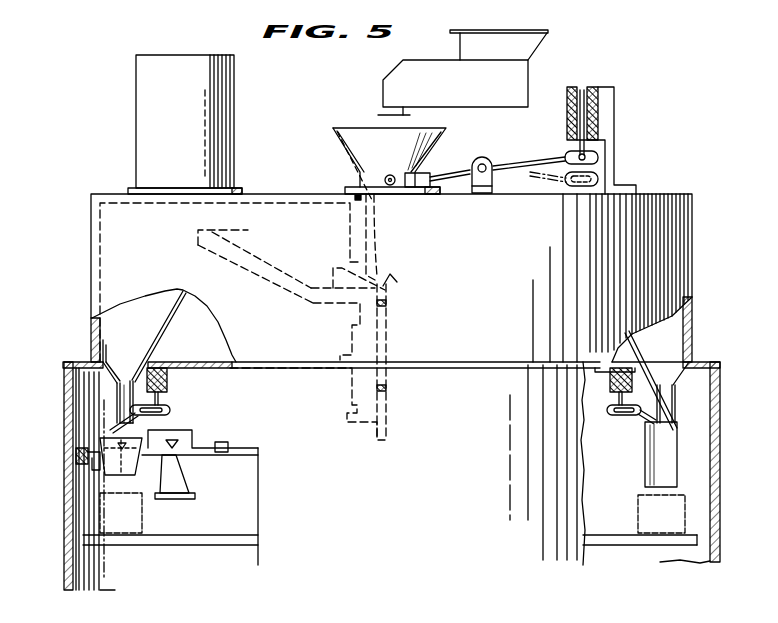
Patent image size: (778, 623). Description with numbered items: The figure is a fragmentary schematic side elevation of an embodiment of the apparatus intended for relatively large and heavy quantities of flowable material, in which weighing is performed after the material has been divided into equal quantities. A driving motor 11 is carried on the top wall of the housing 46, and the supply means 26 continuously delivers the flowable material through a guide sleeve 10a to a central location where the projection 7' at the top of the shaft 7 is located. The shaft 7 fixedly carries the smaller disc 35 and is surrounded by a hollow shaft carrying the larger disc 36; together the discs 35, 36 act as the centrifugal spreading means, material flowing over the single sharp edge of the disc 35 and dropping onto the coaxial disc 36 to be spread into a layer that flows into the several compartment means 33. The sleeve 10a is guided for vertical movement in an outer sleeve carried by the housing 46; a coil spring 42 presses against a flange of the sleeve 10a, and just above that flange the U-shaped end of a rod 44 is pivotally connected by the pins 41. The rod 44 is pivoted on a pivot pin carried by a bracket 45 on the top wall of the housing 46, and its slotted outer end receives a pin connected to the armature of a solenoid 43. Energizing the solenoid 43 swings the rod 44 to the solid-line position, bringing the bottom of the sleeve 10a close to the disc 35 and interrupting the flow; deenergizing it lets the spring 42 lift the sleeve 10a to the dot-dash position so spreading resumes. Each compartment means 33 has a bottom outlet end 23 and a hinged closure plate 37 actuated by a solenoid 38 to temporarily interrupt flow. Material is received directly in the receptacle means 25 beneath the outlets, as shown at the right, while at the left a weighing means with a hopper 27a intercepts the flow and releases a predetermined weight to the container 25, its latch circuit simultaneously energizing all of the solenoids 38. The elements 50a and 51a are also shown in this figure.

The driving motor 11 is at (235, 118).
The supply means 26 is at (424, 72).
The guide sleeve 10a is at (363, 136).
The pins 41 is at (390, 175).
The coil spring 42 is at (354, 197).
The bracket 45 is at (489, 166).
The rod 44 is at (530, 168).
The solenoid 43 is at (567, 114).
The housing 46 is at (92, 278).
The disc 36 is at (276, 278).
The disc 35 is at (332, 276).
The projection 7' is at (398, 269).
The shaft 7 is at (391, 362).
The compartment means 33 is at (146, 324).
The bottom outlet end 23 is at (111, 398).
The solenoid 38 is at (168, 392).
The hinged closure plate 37 is at (113, 422).
The hopper 27a is at (99, 443).
The cam bracket 50a is at (204, 454).
The switch 51a is at (222, 442).
The receptacle means 25 is at (144, 523).